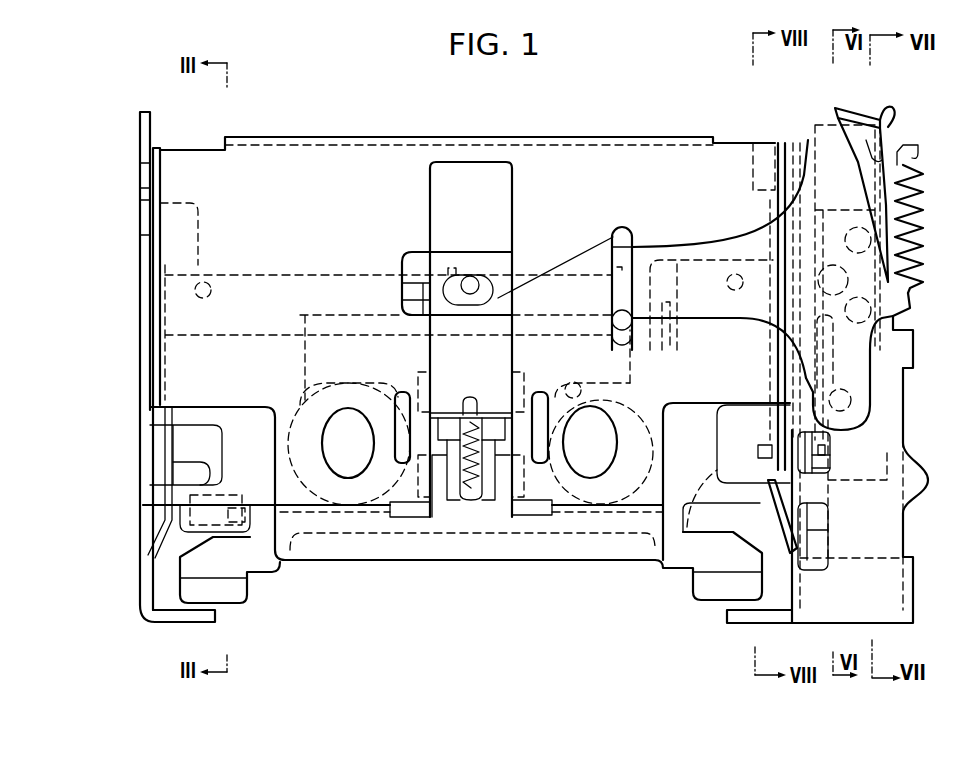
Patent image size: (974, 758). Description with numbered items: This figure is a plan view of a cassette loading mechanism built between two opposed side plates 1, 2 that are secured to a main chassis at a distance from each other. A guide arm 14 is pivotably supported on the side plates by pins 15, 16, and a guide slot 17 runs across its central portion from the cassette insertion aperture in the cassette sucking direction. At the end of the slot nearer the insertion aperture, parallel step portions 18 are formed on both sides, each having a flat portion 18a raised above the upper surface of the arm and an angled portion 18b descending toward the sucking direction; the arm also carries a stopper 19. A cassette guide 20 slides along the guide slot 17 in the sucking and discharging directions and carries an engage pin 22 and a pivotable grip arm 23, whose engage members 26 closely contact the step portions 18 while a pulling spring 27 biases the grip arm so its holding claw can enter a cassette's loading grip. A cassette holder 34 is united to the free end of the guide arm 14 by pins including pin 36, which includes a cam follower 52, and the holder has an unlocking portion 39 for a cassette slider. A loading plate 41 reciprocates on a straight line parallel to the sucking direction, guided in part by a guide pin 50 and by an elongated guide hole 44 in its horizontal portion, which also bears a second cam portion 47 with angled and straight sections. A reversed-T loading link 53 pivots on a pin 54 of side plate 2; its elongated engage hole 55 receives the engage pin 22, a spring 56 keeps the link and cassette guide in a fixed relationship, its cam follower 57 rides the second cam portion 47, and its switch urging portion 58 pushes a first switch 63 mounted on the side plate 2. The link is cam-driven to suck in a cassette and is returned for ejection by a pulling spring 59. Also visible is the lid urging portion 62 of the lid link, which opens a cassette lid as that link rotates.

The side plate 1 is at (178, 628).
The side plate 2 is at (881, 614).
The guide arm 14 is at (608, 150).
The pin 15 is at (140, 176).
The pin 16 is at (797, 175).
The guide slot 17 is at (467, 162).
The step portions 18 is at (405, 465).
The flat portion 18a is at (400, 457).
The angled portion 18b is at (412, 395).
The stopper 19 is at (565, 385).
The cassette guide 20 is at (353, 315).
The engage pin 22 is at (505, 292).
The grip arm 23 is at (488, 483).
The engage members 26 is at (410, 432).
The pulling spring 27 is at (468, 483).
The cassette holder 34 is at (697, 596).
The pin 36 is at (793, 450).
The unlocking portion 39 is at (672, 340).
The loading plate 41 is at (893, 542).
The elongated guide hole 44 is at (865, 280).
The second cam portion 47 is at (867, 437).
The guide pin 50 is at (895, 316).
The cam follower 52 is at (820, 462).
The loading link 53 is at (727, 255).
The pin 54 is at (835, 272).
The engage hole 55 is at (478, 283).
The spring 56 is at (633, 283).
The cam follower 57 is at (840, 402).
The switch urging portion 58 is at (863, 108).
The pulling spring 59 is at (920, 170).
The lid urging portion 62 is at (753, 143).
The first switch 63 is at (872, 150).